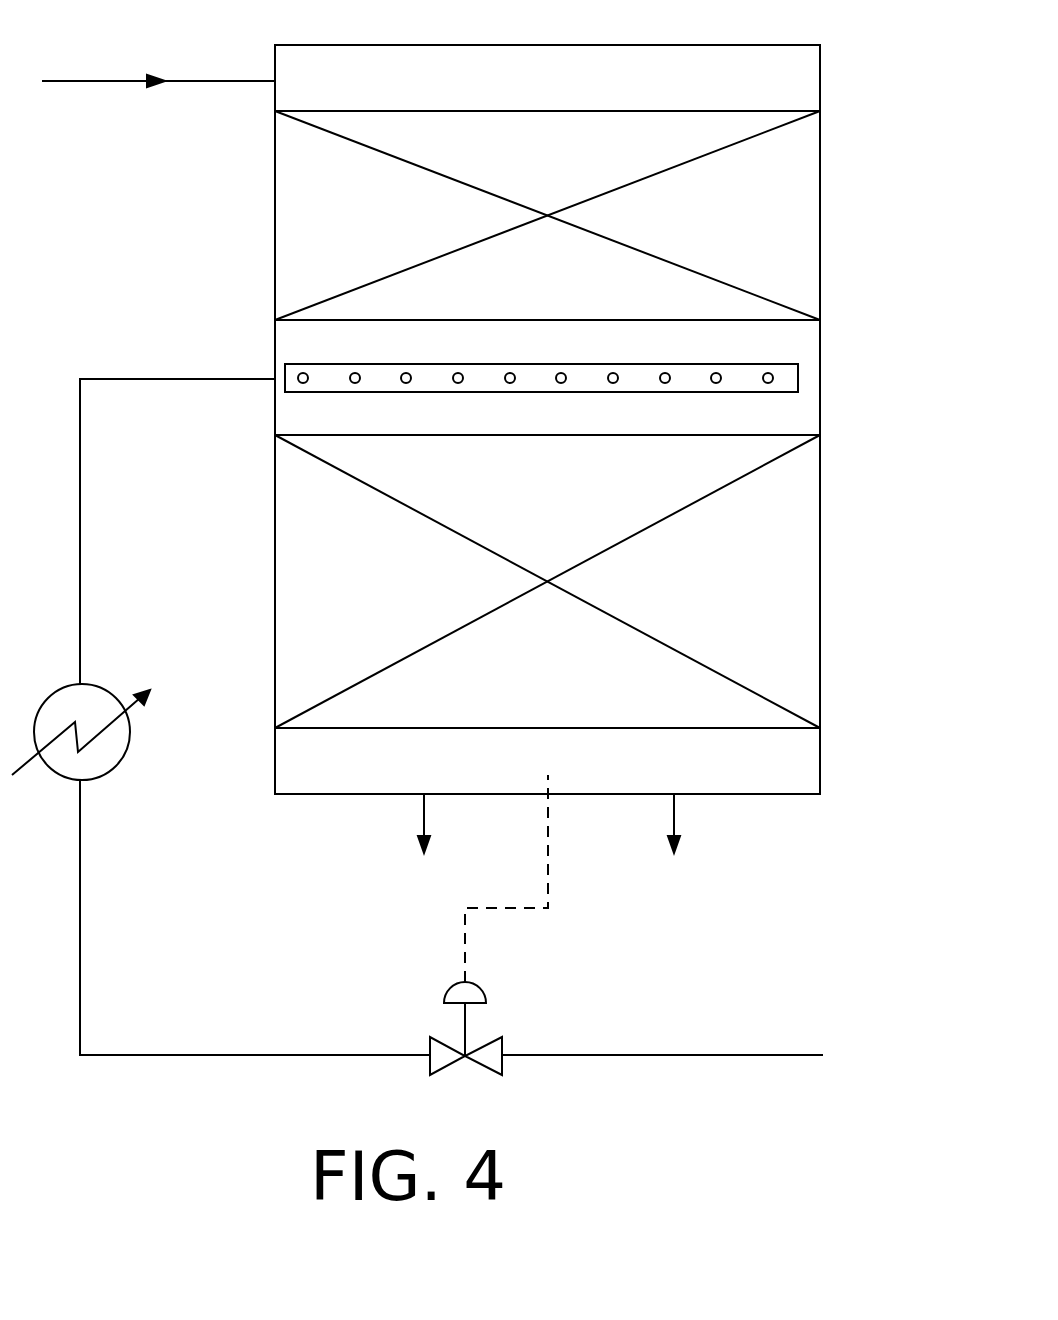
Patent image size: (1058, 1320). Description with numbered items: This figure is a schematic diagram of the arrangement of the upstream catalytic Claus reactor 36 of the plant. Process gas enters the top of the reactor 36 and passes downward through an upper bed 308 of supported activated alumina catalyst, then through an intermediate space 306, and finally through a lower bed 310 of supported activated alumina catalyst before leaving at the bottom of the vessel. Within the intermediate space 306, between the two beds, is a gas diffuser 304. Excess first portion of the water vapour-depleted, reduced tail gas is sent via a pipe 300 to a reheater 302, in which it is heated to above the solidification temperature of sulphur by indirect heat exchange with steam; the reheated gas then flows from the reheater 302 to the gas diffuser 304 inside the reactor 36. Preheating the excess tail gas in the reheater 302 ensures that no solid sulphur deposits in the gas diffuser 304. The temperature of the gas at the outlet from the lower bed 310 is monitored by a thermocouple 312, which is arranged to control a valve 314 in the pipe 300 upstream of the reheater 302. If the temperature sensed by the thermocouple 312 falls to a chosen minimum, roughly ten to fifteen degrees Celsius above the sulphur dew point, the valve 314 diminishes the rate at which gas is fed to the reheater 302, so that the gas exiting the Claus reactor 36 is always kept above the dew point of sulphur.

The upstream catalytic Claus reactor 36 is at (848, 511).
The pipe 300 is at (707, 1053).
The reheater 302 is at (120, 765).
The gas diffuser 304 is at (786, 378).
The intermediate space 306 is at (290, 348).
The upper bed 308 is at (290, 212).
The lower bed 310 is at (290, 574).
The thermocouple 312 is at (542, 775).
The valve 314 is at (432, 1065).